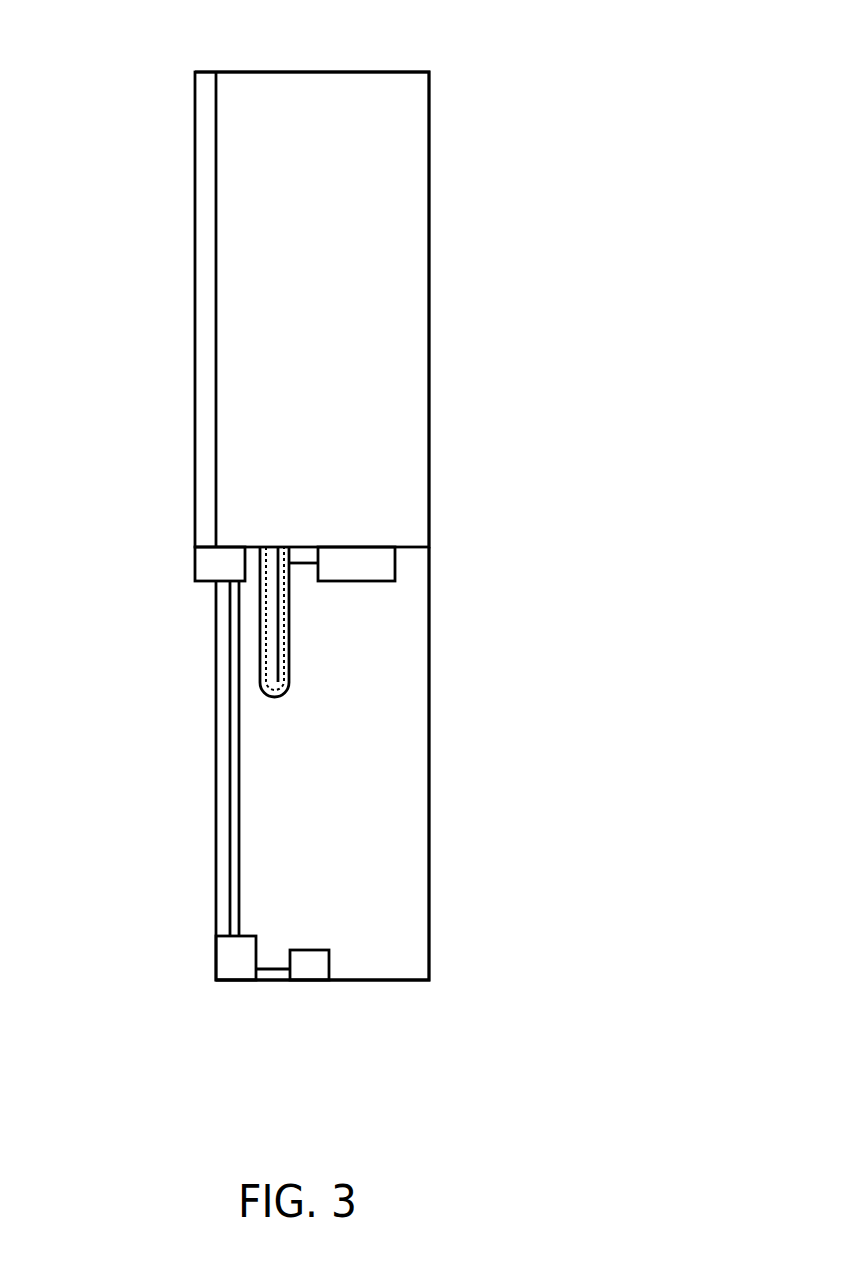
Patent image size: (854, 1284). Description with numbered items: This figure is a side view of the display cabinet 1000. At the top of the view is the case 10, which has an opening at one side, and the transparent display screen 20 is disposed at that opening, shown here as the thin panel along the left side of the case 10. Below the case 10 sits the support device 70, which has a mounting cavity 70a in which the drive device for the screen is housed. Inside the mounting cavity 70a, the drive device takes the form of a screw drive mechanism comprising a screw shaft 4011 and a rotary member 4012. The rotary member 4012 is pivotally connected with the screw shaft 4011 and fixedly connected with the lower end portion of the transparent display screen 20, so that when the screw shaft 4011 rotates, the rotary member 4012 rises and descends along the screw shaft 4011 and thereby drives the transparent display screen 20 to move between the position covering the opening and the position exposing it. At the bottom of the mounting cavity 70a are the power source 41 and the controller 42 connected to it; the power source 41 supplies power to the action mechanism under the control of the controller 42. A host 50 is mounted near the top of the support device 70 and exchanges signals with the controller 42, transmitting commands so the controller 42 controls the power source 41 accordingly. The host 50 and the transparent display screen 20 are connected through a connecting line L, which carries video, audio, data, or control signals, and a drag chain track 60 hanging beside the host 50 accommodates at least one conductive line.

The display cabinet 1000 is at (116, 43).
The case 10 is at (383, 169).
The transparent display screen 20 is at (208, 428).
The rotary member 4012 is at (220, 564).
The screw shaft 4011 is at (233, 758).
The power source 41 is at (245, 952).
The controller 42 is at (308, 965).
The host 50 is at (357, 563).
The drag chain track 60 is at (288, 645).
The connecting line L is at (288, 598).
The support device 70 is at (428, 808).
The mounting cavity 70a is at (402, 867).